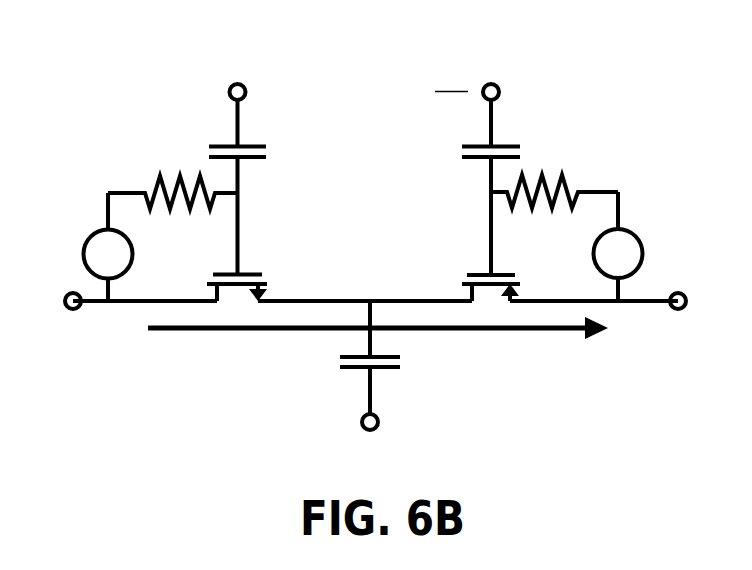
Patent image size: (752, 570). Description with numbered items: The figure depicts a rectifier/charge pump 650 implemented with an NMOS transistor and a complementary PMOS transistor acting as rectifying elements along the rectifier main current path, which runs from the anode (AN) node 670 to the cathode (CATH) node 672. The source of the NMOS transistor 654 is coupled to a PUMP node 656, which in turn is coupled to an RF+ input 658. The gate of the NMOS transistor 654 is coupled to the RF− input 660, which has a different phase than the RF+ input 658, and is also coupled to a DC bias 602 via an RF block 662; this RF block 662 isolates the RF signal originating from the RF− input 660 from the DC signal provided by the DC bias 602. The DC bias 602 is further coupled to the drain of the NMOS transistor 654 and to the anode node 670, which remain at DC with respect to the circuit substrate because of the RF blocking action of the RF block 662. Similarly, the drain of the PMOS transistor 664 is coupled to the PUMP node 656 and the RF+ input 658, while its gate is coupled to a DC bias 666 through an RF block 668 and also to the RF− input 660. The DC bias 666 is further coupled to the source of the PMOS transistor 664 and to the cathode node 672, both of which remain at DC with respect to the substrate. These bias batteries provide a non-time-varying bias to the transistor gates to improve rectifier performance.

The rectifier/charge pump 650 is at (95, 34).
The DC bias 602 is at (88, 233).
The RF block 662 is at (175, 144).
The RF− input 660 is at (293, 96).
The RF block 668 is at (590, 138).
The PMOS transistor 664 is at (463, 248).
The DC bias 666 is at (647, 230).
The PUMP node 656 is at (387, 266).
The NMOS transistor 654 is at (243, 295).
The anode (AN) node 670 is at (93, 342).
The cathode (CATH) node 672 is at (702, 338).
The RF+ input 658 is at (425, 422).